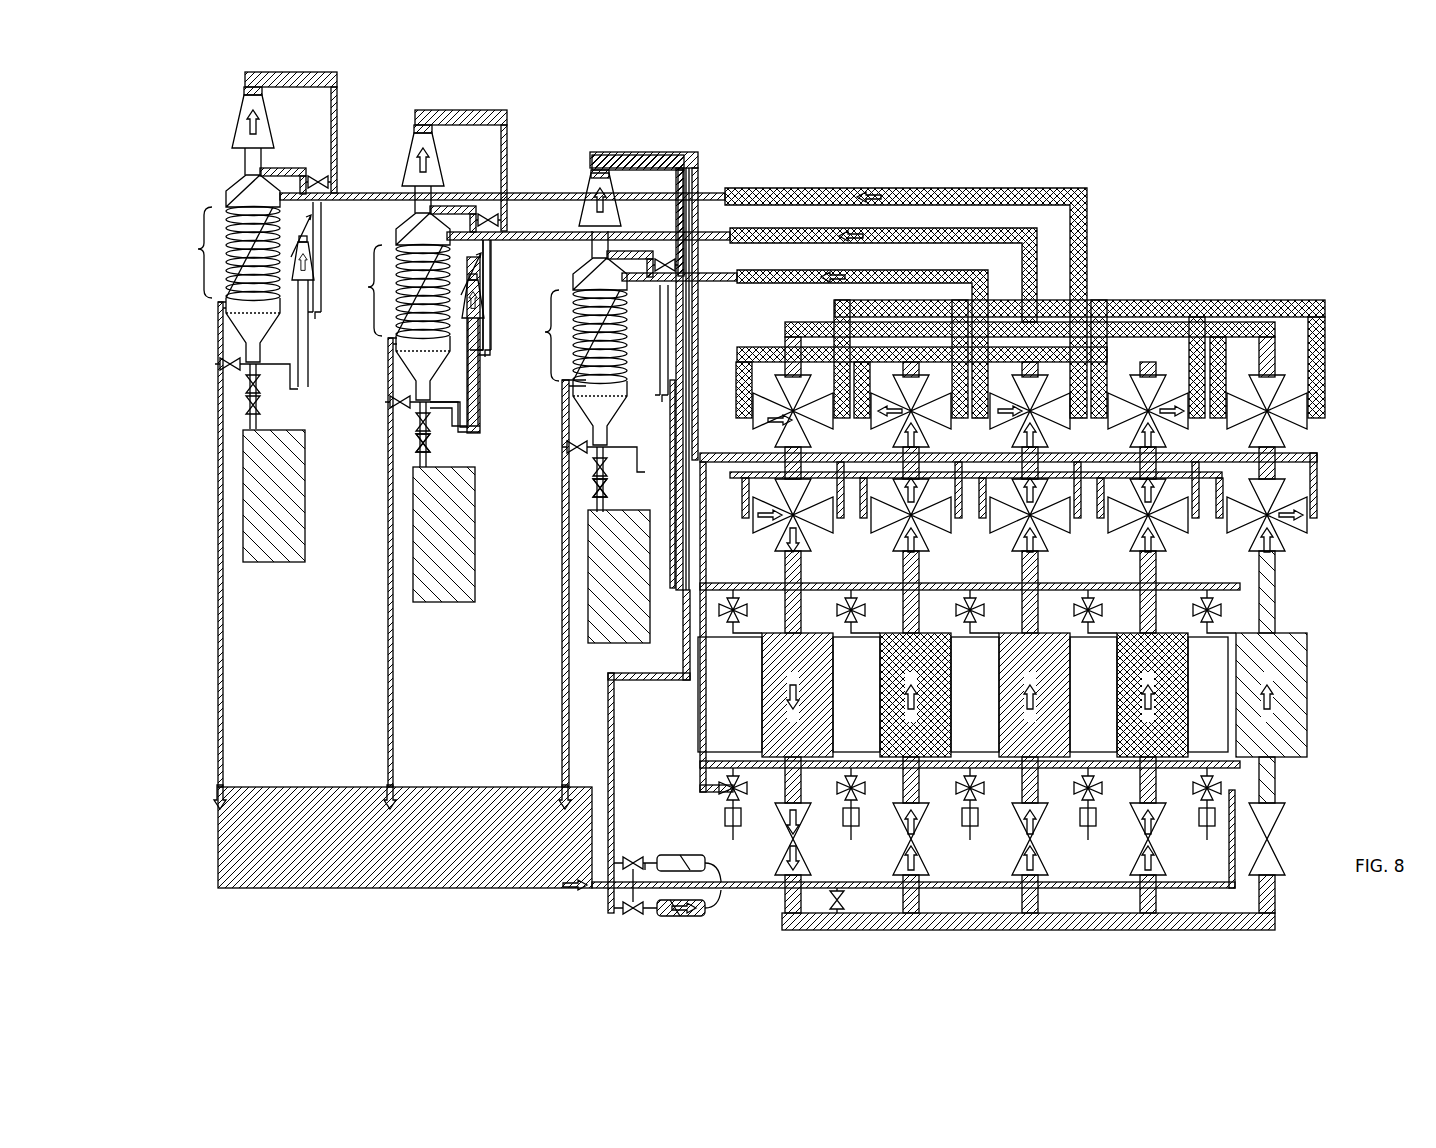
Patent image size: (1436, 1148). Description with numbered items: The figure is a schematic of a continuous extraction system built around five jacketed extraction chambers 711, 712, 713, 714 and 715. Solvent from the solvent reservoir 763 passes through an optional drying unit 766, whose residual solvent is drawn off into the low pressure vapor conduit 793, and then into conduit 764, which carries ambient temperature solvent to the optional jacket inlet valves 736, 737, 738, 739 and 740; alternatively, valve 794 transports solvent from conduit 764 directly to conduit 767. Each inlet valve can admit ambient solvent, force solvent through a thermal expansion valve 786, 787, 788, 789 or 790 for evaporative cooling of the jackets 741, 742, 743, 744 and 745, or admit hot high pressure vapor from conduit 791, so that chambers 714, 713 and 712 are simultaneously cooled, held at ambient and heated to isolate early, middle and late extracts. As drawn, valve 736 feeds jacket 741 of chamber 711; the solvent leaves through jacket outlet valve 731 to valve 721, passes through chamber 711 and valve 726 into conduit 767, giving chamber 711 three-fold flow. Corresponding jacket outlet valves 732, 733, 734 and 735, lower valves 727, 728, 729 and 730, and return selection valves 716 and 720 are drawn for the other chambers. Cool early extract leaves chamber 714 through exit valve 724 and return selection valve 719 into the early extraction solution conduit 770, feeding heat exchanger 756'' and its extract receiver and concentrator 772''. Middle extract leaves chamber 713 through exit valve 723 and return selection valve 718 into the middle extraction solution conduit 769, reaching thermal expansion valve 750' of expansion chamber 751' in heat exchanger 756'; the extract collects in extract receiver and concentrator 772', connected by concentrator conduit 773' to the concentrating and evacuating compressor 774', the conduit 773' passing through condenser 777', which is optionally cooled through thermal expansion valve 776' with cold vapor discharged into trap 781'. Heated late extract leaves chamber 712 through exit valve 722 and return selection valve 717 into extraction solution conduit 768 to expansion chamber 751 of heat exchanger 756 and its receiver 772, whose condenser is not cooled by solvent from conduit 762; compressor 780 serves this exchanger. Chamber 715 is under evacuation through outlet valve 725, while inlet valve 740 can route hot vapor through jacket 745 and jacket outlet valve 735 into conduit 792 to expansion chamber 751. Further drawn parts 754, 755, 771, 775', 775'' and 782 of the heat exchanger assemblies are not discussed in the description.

The jacketed extraction chamber 711 is at (824, 684).
The jacketed extraction chamber 712 is at (944, 684).
The jacketed extraction chamber 713 is at (1061, 684).
The jacketed extraction chamber 714 is at (1180, 684).
The jacketed extraction chamber 715 is at (1306, 662).
The four-way valve 716 is at (771, 420).
The return selection valve 717 is at (891, 420).
The return selection valve 718 is at (1006, 420).
The return selection valve 719 is at (1126, 420).
The four-way valve 720 is at (1245, 420).
The valve 721 is at (775, 526).
The exit valve 722 is at (895, 526).
The exit valve 723 is at (1012, 526).
The exit valve 724 is at (1130, 526).
The outlet valve 725 is at (1249, 526).
The valve 726 is at (806, 839).
The valve 727 is at (924, 839).
The valve 728 is at (1043, 839).
The valve 729 is at (1161, 839).
The valve 730 is at (1280, 819).
The jacket outlet valve 731 is at (732, 624).
The three-way valve 732 is at (855, 628).
The three-way valve 733 is at (972, 628).
The three-way valve 734 is at (1092, 628).
The jacket outlet valve 735 is at (1211, 628).
The jacket inlet valve 736 is at (730, 798).
The jacket inlet valve 737 is at (846, 800).
The jacket inlet valve 738 is at (965, 800).
The jacket inlet valve 739 is at (1086, 800).
The jacket inlet valve 740 is at (1205, 800).
The jacket 741 is at (762, 694).
The chamber 742 is at (840, 726).
The chamber 743 is at (962, 726).
The chamber 744 is at (1079, 726).
The extraction chamber jacket 745 is at (1220, 726).
The thermal expansion valve 750' is at (448, 166).
The expansion chamber 751 is at (604, 371).
The expansion chamber 751' is at (443, 326).
The housing 754 is at (562, 408).
The heat exchange coil 755 is at (572, 294).
The heat exchanger 756 is at (536, 335).
The heat exchanger 756' is at (359, 290).
The heat exchanger 756'' is at (190, 252).
The conduit 762 is at (561, 618).
The solvent reservoir 763 is at (448, 782).
The conduit 764 is at (740, 890).
The drying unit 766 is at (670, 876).
The conduit 767 is at (1276, 922).
The extraction solution conduit 768 is at (932, 268).
The middle extraction solution conduit 769 is at (979, 227).
The early extraction solution conduit 770 is at (1018, 188).
The drain valve 771 is at (595, 486).
The extract receiver and concentrator 772 is at (619, 588).
The extract receiver and concentrator 772' is at (465, 534).
The extract receiver and concentrator 772'' is at (296, 496).
The concentrator conduit 773' is at (502, 306).
The concentrating and evacuating compressor 774' is at (499, 345).
The auxiliary compressor 775' is at (496, 339).
The auxiliary compressor 775'' is at (302, 301).
The thermal expansion valve 776' is at (443, 446).
The condenser 777' is at (477, 411).
The compressor 780 is at (578, 216).
The trap 781' is at (431, 171).
The condenser housing 782 is at (673, 152).
The thermal expansion valve 786 is at (738, 827).
The thermal expansion valve 787 is at (854, 828).
The thermal expansion valve 788 is at (971, 828).
The thermal expansion valve 789 is at (1089, 828).
The thermal expansion valve 790 is at (1208, 828).
The hot high pressure vapor conduit 791 is at (683, 680).
The conduit 792 is at (690, 306).
The low pressure vapor conduit 793 is at (711, 452).
The valve 794 is at (846, 903).